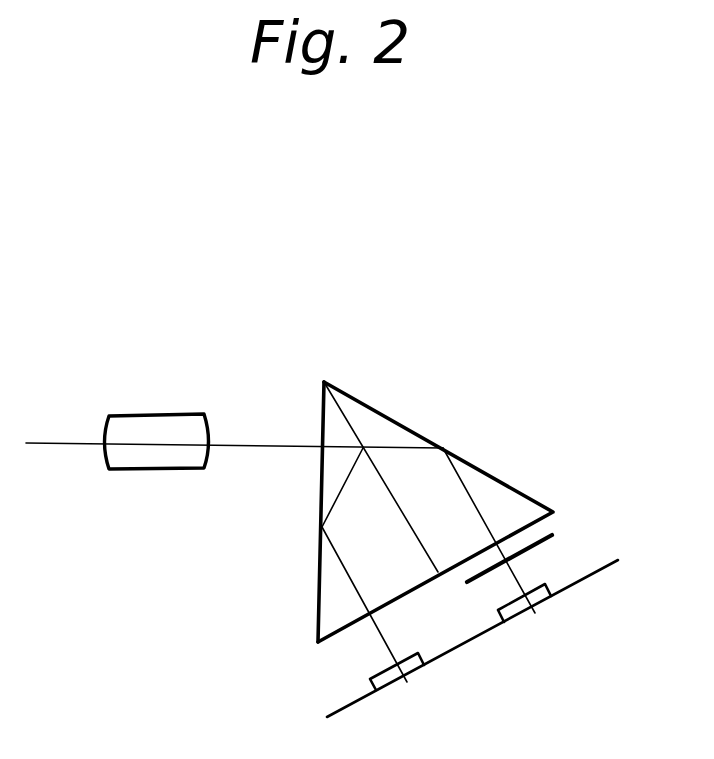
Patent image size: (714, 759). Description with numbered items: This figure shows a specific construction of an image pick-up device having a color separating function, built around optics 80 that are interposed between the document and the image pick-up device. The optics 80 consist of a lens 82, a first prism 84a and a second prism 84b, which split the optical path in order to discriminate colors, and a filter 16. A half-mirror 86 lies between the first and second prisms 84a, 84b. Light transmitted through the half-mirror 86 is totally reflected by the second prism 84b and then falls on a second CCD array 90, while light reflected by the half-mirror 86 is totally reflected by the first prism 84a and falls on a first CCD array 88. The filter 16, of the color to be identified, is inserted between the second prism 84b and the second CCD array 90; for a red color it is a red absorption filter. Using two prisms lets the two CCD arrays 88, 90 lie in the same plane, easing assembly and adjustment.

The optics 80 is at (446, 293).
The lens 82 is at (157, 415).
The first prism 84a is at (332, 595).
The second prism 84b is at (502, 495).
The half-mirror 86 is at (350, 422).
The filter 16 is at (547, 543).
The first CCD array 88 is at (385, 678).
The second CCD array 90 is at (543, 593).